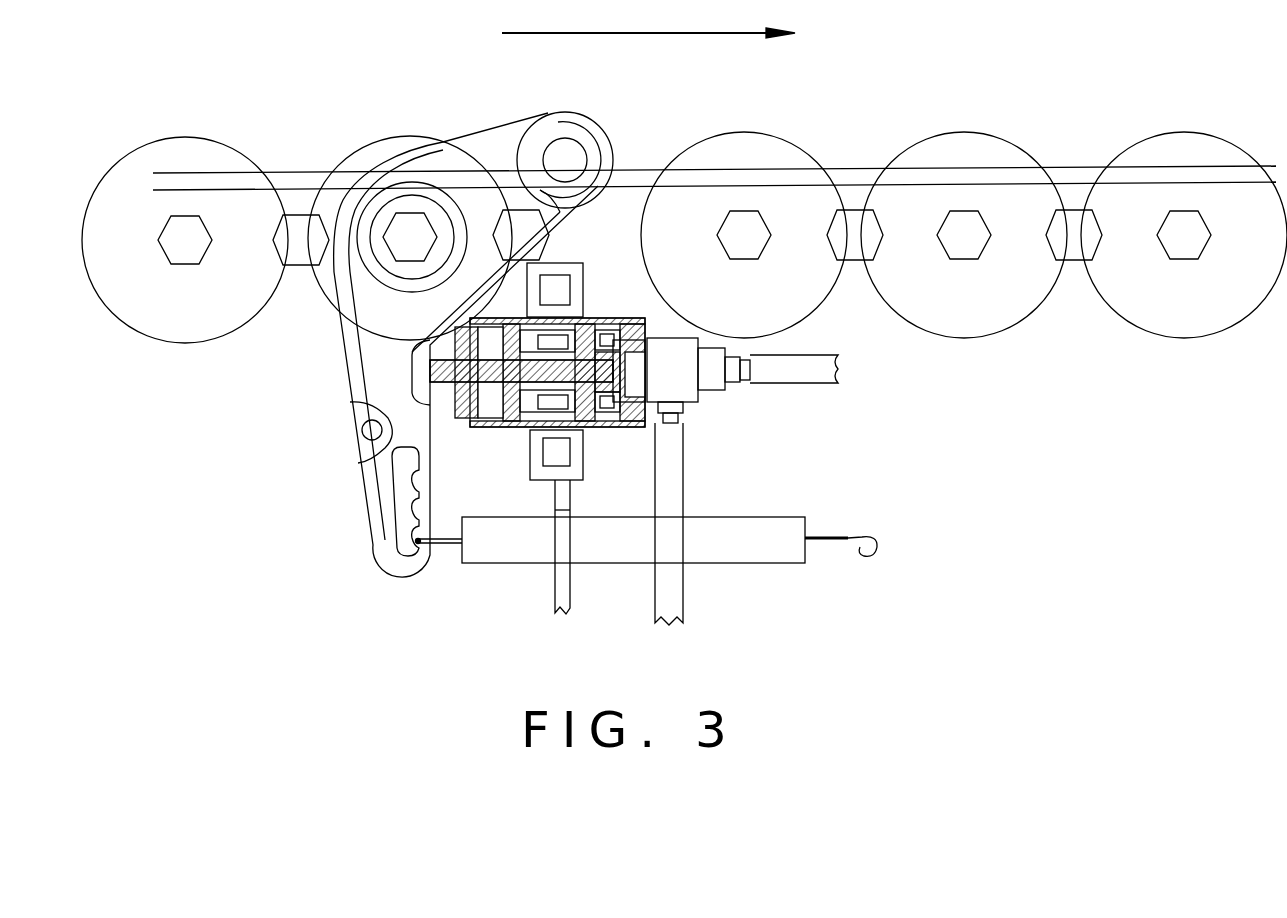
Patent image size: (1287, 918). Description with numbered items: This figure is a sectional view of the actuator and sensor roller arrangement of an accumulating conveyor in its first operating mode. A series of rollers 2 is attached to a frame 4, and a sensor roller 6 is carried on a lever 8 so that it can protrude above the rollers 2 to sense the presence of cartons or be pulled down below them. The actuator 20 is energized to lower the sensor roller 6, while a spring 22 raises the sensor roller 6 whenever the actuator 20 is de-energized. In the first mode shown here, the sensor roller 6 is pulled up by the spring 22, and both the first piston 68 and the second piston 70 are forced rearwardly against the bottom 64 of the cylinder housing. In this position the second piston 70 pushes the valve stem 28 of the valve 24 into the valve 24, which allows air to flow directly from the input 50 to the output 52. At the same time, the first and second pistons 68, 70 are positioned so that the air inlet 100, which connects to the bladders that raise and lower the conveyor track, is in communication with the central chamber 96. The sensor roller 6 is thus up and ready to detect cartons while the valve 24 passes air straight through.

The rollers 2 is at (743, 128).
The frame 4 is at (1065, 165).
The sensor roller 6 is at (571, 114).
The lever 8 is at (496, 136).
The actuator 20 is at (617, 320).
The spring 22 is at (503, 565).
The valve 24 is at (686, 388).
The valve stem 28 is at (598, 410).
The input 50 is at (802, 385).
The output 52 is at (684, 437).
The bottom of the cylinder housing 64 is at (642, 430).
The first piston 68 is at (500, 402).
The second piston 70 is at (553, 405).
The central chamber 96 is at (553, 337).
The air inlet 100 is at (572, 583).